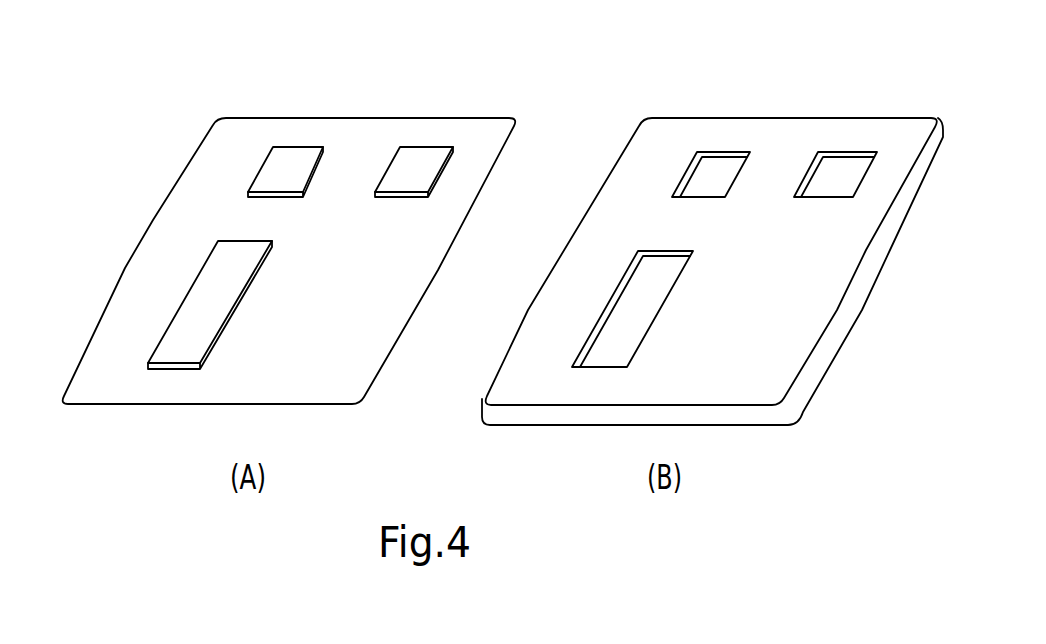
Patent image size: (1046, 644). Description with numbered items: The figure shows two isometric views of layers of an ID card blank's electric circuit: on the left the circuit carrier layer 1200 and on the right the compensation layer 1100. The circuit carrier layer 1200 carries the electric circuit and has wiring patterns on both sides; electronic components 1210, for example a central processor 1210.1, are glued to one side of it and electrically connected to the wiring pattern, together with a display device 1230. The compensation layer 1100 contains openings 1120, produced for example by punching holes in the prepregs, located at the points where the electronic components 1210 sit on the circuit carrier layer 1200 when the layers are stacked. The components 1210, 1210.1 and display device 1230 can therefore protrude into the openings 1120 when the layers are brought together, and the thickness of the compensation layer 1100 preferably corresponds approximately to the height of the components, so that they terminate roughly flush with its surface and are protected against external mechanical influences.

The circuit carrier layer 1200 is at (521, 117).
The central processor 1210.1 is at (293, 145).
The electronic components 1210 is at (425, 144).
The display device 1230 is at (173, 371).
The compensation layer 1100 is at (837, 113).
The openings 1120 is at (712, 174).